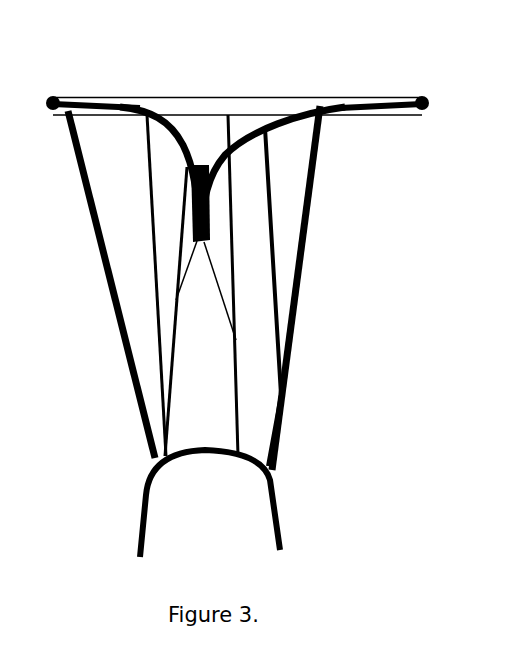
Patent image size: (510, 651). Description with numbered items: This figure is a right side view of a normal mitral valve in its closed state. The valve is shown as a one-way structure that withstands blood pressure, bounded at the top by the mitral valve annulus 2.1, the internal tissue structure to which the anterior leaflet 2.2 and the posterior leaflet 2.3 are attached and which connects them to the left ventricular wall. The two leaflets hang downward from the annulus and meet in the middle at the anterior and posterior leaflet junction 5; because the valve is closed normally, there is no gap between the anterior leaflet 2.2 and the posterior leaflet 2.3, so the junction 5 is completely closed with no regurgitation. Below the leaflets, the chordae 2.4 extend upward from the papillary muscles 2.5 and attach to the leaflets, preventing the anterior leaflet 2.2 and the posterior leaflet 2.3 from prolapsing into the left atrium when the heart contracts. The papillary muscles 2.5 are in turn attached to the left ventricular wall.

The mitral valve annulus 2.1 is at (75, 87).
The anterior leaflet 2.2 is at (283, 146).
The posterior leaflet 2.3 is at (114, 128).
The chordae 2.4 is at (290, 407).
The papillary muscles 2.5 is at (225, 524).
The anterior and posterior leaflet junction 5 is at (220, 236).